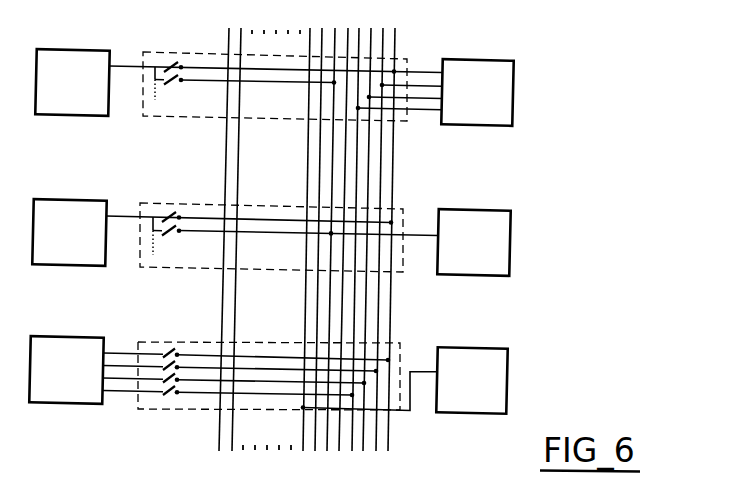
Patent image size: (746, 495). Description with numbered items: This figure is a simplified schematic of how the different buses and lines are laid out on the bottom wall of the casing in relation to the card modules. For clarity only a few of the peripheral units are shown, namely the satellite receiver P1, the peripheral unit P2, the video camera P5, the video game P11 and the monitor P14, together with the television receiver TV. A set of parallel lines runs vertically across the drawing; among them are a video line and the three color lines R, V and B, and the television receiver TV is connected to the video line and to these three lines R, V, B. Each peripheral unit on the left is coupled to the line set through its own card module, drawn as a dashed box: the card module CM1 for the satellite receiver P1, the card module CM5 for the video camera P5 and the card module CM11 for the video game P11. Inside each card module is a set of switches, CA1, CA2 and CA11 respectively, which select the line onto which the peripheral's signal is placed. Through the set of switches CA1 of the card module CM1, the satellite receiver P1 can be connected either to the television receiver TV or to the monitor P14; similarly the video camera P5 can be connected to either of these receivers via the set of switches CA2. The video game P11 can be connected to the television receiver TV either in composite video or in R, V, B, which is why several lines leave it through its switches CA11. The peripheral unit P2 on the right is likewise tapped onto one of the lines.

The satellite receiver P1 is at (72, 82).
The video camera P5 is at (69, 232).
The video game P11 is at (66, 370).
The peripheral unit P2 is at (471, 380).
The monitor P14 is at (473, 242).
The television receiver TV is at (477, 92).
The set of switches CA1 is at (173, 81).
The set of switches CA2 is at (170, 233).
The switching assembly 11 CA11 is at (145, 379).
The card module CM1 is at (275, 86).
The connection module 5 CM5 is at (272, 237).
The connection module 11 CM11 is at (287, 376).
The line B is at (354, 18).
The line V is at (368, 20).
The line R is at (380, 18).